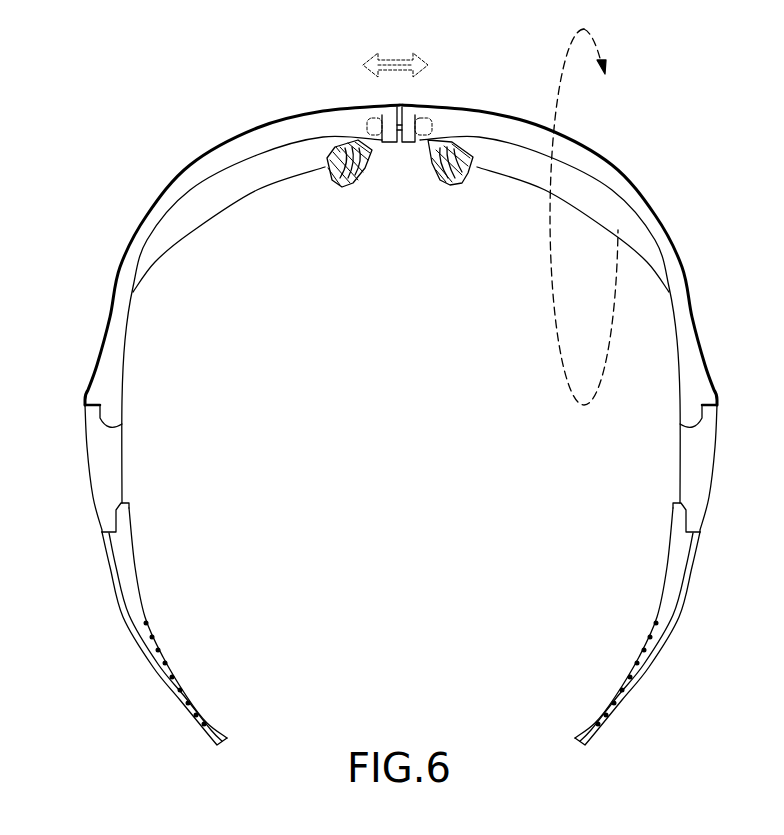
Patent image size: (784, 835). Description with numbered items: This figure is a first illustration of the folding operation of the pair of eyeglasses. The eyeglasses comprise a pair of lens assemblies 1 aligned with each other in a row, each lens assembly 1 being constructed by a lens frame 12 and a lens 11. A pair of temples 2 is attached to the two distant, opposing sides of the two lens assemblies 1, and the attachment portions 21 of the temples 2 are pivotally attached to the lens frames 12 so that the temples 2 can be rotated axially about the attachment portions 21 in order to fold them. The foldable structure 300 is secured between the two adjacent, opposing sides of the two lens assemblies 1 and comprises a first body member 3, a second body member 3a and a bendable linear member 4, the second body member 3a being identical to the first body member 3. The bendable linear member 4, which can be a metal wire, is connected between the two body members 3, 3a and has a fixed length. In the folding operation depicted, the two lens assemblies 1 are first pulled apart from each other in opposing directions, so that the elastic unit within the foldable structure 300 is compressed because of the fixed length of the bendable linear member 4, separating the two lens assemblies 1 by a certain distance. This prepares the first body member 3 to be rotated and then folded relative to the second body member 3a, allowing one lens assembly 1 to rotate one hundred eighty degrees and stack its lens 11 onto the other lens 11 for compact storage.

The lens assembly 1 is at (426, 283).
The lens 11 is at (406, 183).
The lens frame 12 is at (162, 208).
The temple 2 is at (396, 574).
The attachment portion 21 is at (123, 410).
The first body member 3 is at (418, 145).
The second body member 3a is at (383, 145).
The foldable structure 300 is at (400, 223).
The bendable linear member 4 is at (400, 112).